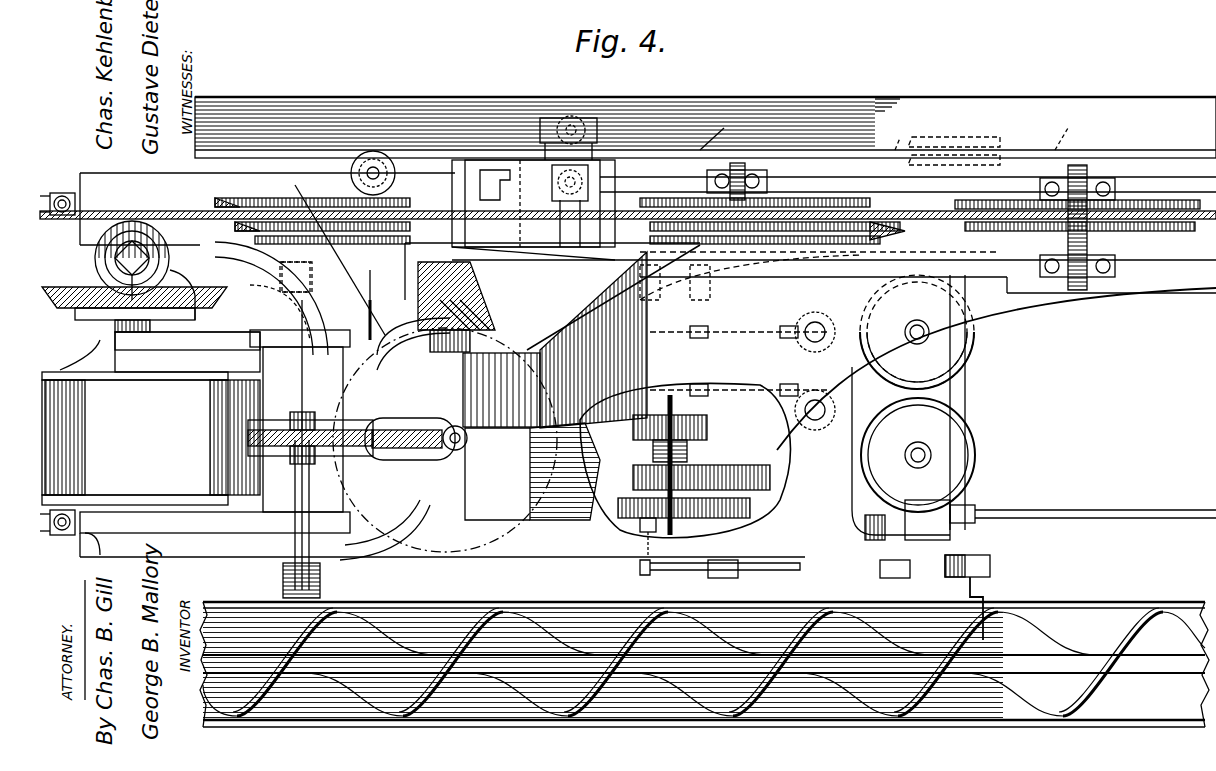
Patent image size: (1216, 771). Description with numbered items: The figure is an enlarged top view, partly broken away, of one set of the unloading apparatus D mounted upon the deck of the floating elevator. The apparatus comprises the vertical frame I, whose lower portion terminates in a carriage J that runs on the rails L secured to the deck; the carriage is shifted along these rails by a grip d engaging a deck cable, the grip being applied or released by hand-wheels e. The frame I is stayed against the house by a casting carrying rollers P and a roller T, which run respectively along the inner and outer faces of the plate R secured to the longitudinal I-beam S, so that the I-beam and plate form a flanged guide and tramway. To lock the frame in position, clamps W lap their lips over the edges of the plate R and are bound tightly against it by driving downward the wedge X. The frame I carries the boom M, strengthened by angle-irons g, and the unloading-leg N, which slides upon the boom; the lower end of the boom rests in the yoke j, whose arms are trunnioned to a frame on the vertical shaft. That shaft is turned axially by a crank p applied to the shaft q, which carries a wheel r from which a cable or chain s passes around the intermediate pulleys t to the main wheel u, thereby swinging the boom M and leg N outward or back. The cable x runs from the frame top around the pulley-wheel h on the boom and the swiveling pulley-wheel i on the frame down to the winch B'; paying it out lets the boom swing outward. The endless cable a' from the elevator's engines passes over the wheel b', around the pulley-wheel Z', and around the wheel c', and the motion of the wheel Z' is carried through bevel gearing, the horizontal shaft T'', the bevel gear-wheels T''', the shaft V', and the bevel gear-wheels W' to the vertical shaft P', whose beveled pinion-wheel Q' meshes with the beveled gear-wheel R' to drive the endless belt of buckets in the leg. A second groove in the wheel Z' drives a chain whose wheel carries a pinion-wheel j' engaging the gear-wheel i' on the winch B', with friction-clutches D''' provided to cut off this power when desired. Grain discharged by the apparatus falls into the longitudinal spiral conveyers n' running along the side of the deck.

The I-beam S is at (705, 127).
The plate R is at (1065, 129).
The wheel r is at (975, 142).
The cable or chain s is at (634, 225).
The endless cable a' is at (628, 223).
The wheel b' is at (906, 239).
The wheel c' is at (767, 201).
The pulley-wheel Z' is at (247, 209).
The carriage J is at (996, 307).
The clamps W is at (546, 166).
The wedge X is at (495, 193).
The rollers P is at (568, 117).
The roller T is at (585, 180).
The intermediate pulleys t is at (352, 173).
The shaft V' is at (332, 254).
The vertical shaft P' is at (114, 258).
The beveled pinion-wheel Q' is at (86, 286).
The beveled gear-wheel R' is at (151, 318).
The bevel gear-wheels W' is at (189, 300).
The unloading-leg N is at (151, 418).
The boom M is at (300, 445).
The pulley-wheel h is at (248, 437).
The cable x is at (292, 412).
The angle-irons g is at (320, 580).
The yoke j is at (395, 449).
The pinion-wheel j' is at (637, 537).
The bevel gear-wheels T''' is at (459, 307).
The horizontal shaft T'' is at (478, 315).
The vertical frame I is at (552, 335).
The main wheel u is at (532, 471).
The pulley-wheel i is at (416, 427).
The friction-clutches D''' is at (756, 461).
The winch B' is at (685, 401).
The grip d is at (700, 345).
The hand-wheels e is at (975, 350).
The shaft q is at (968, 398).
The unloading apparatus D is at (865, 395).
The gear-wheel i' is at (907, 520).
The rails L is at (1030, 512).
The crank p is at (985, 585).
The spiral conveyers n' is at (704, 664).